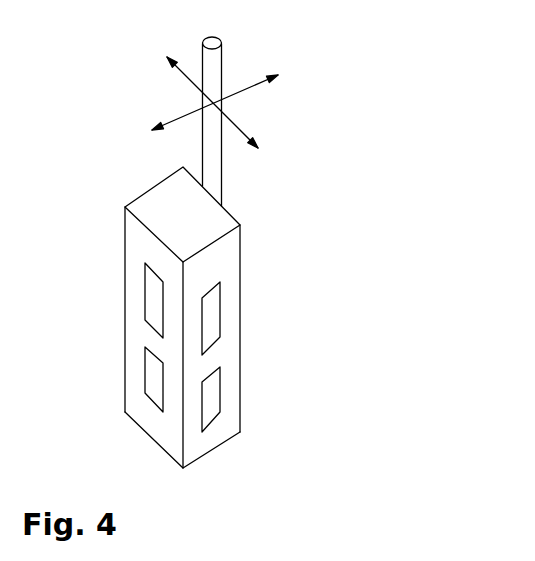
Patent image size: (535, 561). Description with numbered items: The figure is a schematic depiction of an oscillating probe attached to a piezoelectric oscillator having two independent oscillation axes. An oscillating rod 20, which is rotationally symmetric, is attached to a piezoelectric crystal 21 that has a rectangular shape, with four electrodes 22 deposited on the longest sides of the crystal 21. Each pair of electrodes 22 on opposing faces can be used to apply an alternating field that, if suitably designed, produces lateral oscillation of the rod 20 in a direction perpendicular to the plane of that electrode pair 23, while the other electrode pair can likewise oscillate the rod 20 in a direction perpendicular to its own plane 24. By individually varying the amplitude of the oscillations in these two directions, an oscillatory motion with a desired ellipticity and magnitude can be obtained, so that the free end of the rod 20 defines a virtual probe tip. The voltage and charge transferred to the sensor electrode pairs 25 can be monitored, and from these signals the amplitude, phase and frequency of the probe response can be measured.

The oscillating rod 20 is at (231, 47).
The piezoelectric crystal 21 is at (249, 223).
The electrodes 22 is at (169, 294).
The direction perpendicular to the plane of the electrode pair 23 is at (168, 71).
The direction perpendicular to the plane of the other electrode pair 24 is at (160, 117).
The sensor electrode pairs 25 is at (169, 377).